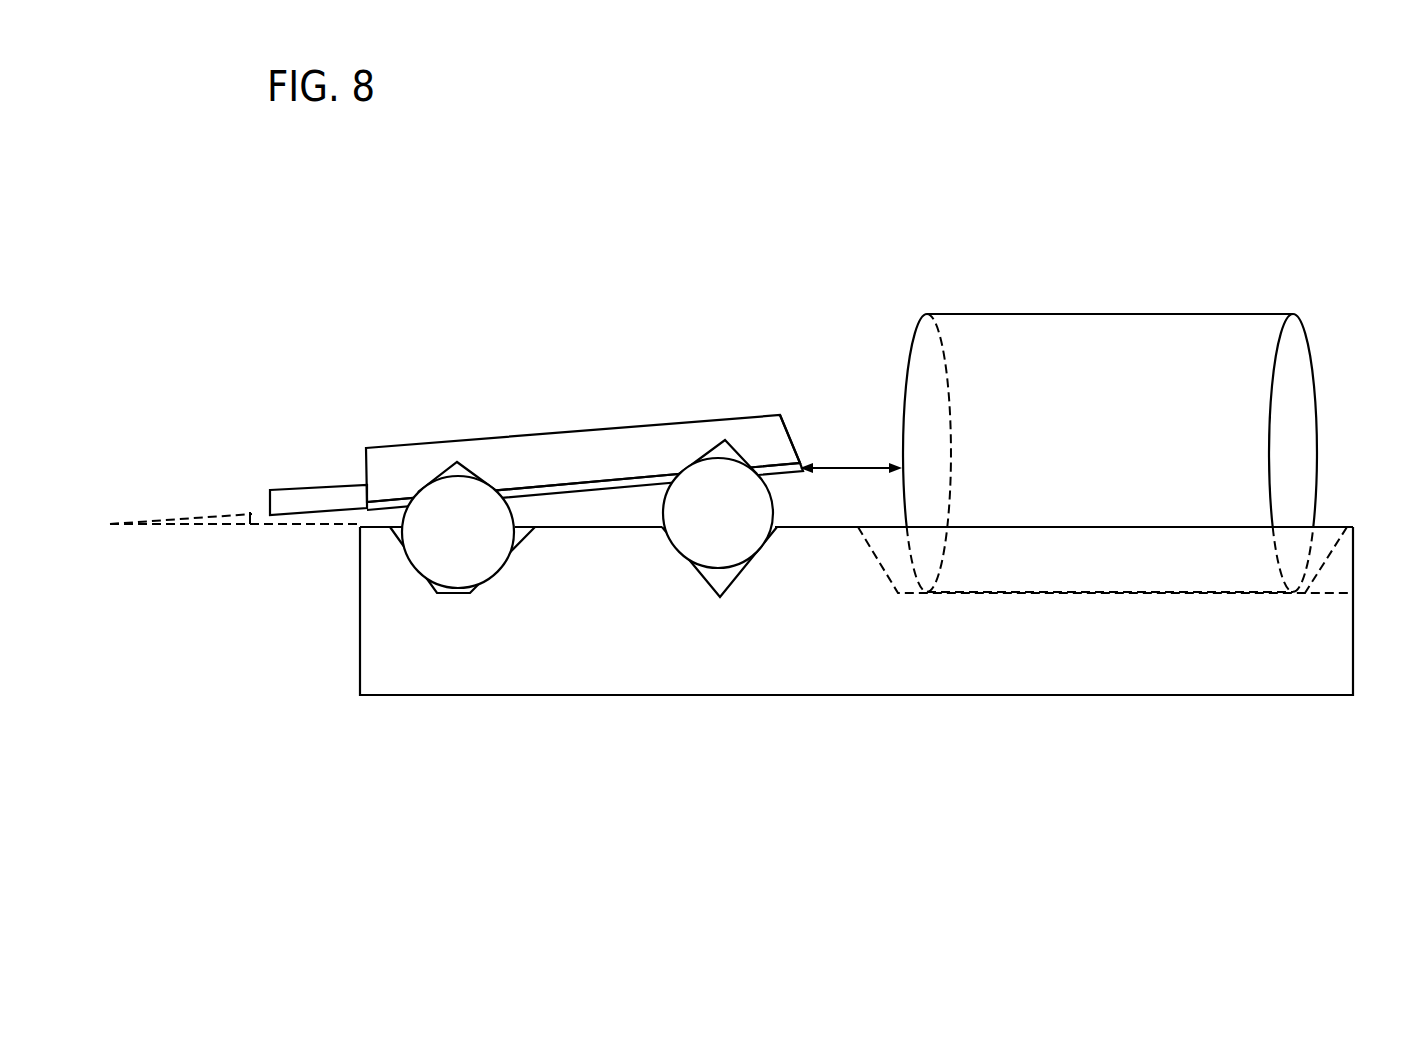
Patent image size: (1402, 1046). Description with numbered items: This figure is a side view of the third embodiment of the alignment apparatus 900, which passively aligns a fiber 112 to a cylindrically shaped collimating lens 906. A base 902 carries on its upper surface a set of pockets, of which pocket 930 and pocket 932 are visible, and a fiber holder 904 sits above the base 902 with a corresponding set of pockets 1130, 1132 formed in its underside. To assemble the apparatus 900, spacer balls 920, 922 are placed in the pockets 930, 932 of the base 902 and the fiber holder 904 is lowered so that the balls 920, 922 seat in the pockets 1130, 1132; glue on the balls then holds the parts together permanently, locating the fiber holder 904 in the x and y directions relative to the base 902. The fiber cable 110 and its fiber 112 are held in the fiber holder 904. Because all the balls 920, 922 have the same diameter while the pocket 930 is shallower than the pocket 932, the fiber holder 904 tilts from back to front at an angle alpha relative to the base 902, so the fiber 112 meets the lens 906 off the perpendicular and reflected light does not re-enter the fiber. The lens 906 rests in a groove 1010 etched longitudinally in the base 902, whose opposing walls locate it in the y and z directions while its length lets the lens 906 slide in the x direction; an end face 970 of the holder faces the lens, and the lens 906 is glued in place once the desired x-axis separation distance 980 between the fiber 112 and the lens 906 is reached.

The alignment apparatus 900 is at (1137, 765).
The base 902 is at (647, 695).
The fiber holder 904 is at (600, 430).
The collimating lens 906 is at (1122, 313).
The spacer ball 920 is at (447, 542).
The spacer ball 922 is at (738, 535).
The pocket 930 is at (458, 595).
The pocket 932 is at (722, 592).
The end face of plate 970 is at (790, 433).
The x-axis separation distance 980 is at (847, 468).
The groove 1010 is at (900, 593).
The pocket 1130 is at (457, 462).
The pocket 1132 is at (725, 440).
The fiber cable 110 is at (305, 483).
The fiber 112 is at (548, 490).
The angle alpha is at (250, 515).